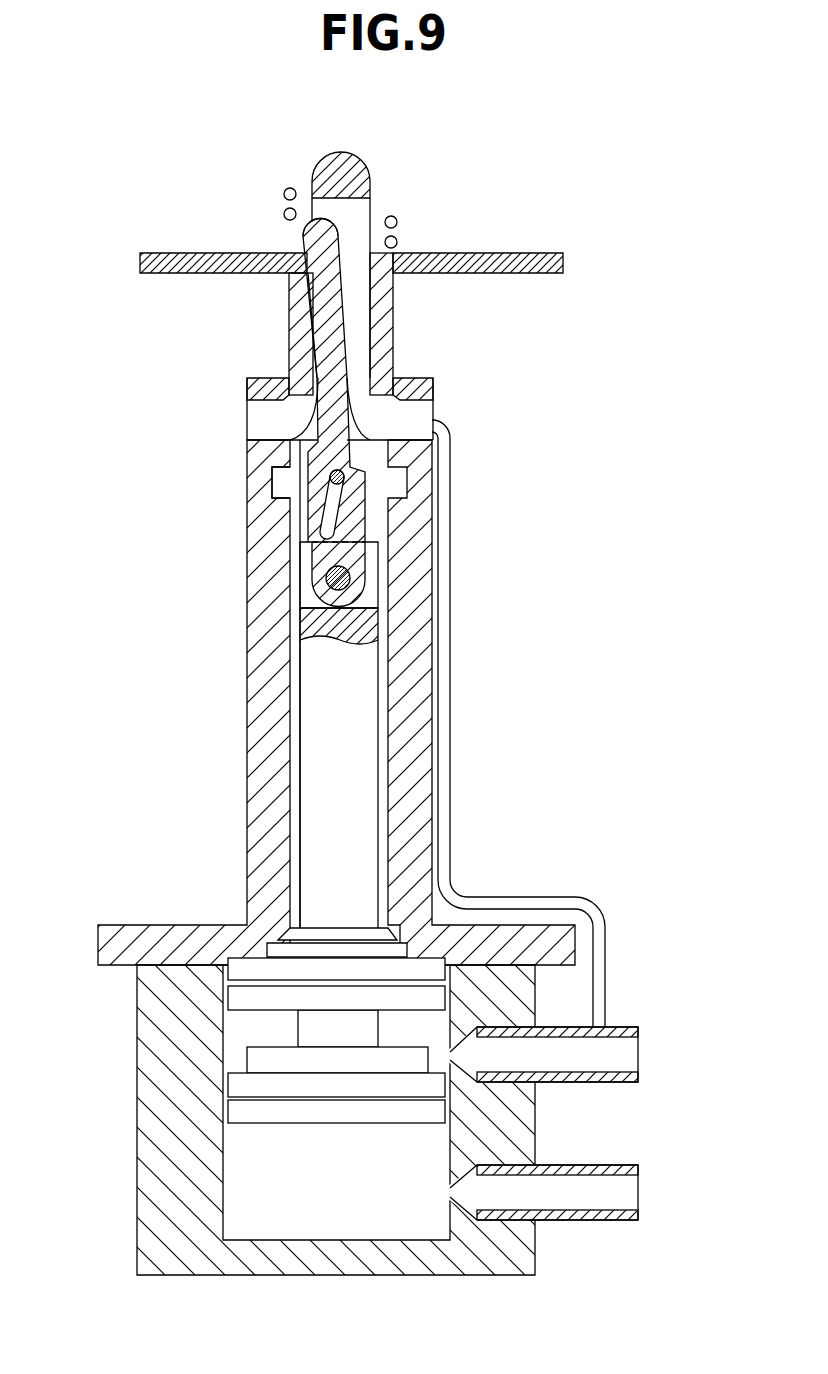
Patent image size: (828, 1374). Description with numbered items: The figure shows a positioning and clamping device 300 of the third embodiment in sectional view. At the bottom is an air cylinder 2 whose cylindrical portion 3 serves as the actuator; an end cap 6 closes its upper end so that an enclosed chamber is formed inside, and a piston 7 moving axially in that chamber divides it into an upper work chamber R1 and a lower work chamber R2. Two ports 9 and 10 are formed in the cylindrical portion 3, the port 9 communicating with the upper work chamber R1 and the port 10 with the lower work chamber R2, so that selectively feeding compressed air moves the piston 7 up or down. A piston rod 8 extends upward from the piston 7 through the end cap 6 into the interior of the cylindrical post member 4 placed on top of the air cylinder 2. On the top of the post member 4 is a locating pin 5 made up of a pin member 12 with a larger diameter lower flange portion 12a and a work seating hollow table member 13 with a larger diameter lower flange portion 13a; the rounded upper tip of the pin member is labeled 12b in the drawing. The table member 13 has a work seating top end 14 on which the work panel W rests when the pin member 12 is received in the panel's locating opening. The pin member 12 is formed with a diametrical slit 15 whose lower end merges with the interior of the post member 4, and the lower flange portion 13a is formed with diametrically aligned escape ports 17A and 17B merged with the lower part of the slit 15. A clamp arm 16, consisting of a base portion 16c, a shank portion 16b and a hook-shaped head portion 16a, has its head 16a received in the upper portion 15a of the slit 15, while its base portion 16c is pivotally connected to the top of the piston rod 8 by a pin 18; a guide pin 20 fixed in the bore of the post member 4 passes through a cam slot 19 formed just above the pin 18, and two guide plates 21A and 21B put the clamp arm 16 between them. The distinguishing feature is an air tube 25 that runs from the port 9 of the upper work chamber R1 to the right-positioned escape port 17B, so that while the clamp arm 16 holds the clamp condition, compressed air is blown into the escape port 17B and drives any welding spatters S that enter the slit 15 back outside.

The positioning and clamping device 300 is at (633, 138).
The work panel W is at (497, 253).
The work seating hollow table member 13 is at (289, 315).
The locating pin 5 is at (394, 327).
The slit 15 is at (360, 290).
The upper portion of slit 15a is at (362, 212).
The rod tip 12b is at (337, 173).
The pin member 12 is at (372, 162).
The escape port 17A is at (258, 420).
The escape port 17B is at (412, 418).
The lower flange portion of table member 13a is at (435, 383).
The cylindrical post member 4 is at (245, 665).
The lower flange portion of pin member 12a is at (258, 467).
The clamp arm 16 is at (357, 517).
The hook-shaped head portion 16a is at (312, 228).
The shank portion 16b is at (323, 302).
The guide plate 21A is at (312, 372).
The guide plate 21B is at (402, 382).
The work seating top end 14 is at (310, 256).
The cam slot 19 is at (342, 495).
The guide pin 20 is at (345, 478).
The base portion 16c is at (372, 530).
The pin 18 is at (328, 578).
The piston rod 8 is at (320, 870).
The air tube 25 is at (452, 738).
The cylindrical portion 3 is at (158, 1077).
The port 9 is at (560, 1055).
The port 10 is at (558, 1197).
The end cap 6 is at (237, 998).
The piston 7 is at (248, 1110).
The spatters S is at (284, 192).
The air cylinder 2 is at (137, 1197).
The upper work chamber R1 is at (407, 1023).
The lower work chamber R2 is at (383, 1218).